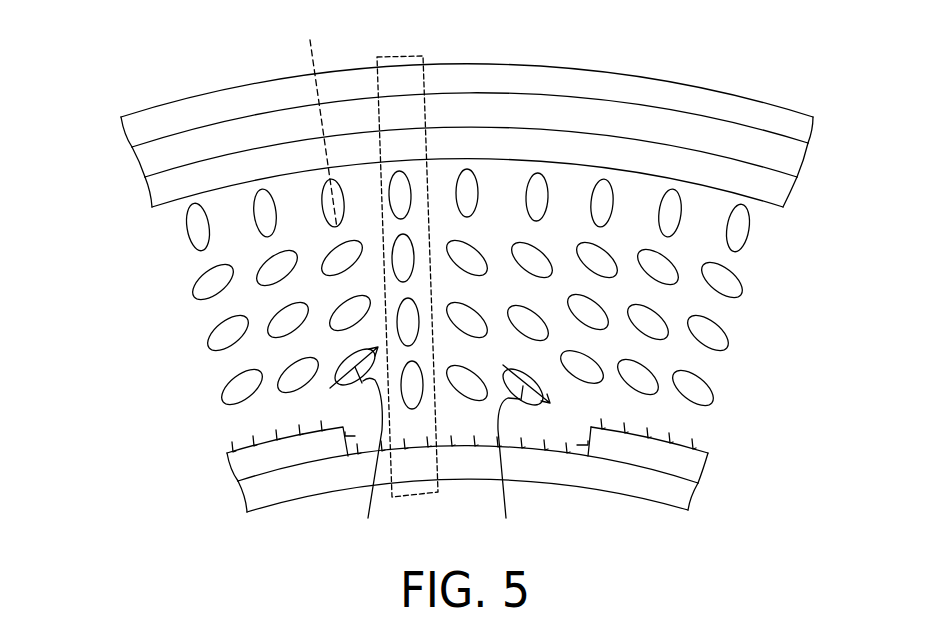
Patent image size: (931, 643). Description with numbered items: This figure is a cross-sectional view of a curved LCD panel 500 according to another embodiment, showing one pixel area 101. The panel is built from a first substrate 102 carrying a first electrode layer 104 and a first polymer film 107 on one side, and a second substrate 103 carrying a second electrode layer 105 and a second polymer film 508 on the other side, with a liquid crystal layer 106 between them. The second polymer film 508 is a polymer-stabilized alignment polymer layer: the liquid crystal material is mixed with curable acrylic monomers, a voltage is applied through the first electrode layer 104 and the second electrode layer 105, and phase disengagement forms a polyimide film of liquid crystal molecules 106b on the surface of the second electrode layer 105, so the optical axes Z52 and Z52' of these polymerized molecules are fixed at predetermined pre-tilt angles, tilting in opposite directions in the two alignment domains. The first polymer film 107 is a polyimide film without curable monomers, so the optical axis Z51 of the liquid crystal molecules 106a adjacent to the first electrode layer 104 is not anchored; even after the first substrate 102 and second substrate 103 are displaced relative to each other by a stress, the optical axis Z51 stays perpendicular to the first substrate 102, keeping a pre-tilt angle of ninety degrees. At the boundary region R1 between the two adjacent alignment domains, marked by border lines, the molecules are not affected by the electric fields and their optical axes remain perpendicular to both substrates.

The curved LCD panel 500 is at (77, 30).
The pixel area 101 is at (575, 53).
The first substrate 102 is at (795, 130).
The first electrode layer 104 is at (788, 160).
The first polymer film 107 is at (777, 188).
The liquid crystal layer 106 is at (723, 422).
The liquid crystal molecules 106a is at (228, 396).
The liquid crystal molecules 106b is at (322, 210).
The second substrate 103 is at (591, 477).
The second electrode layer 105 is at (293, 453).
The second polymer film 508 is at (693, 446).
The boundary region R1 is at (388, 56).
The optical axis Z51 is at (317, 121).
The optical axis Z52 is at (258, 363).
The optical axis Z52' is at (513, 370).